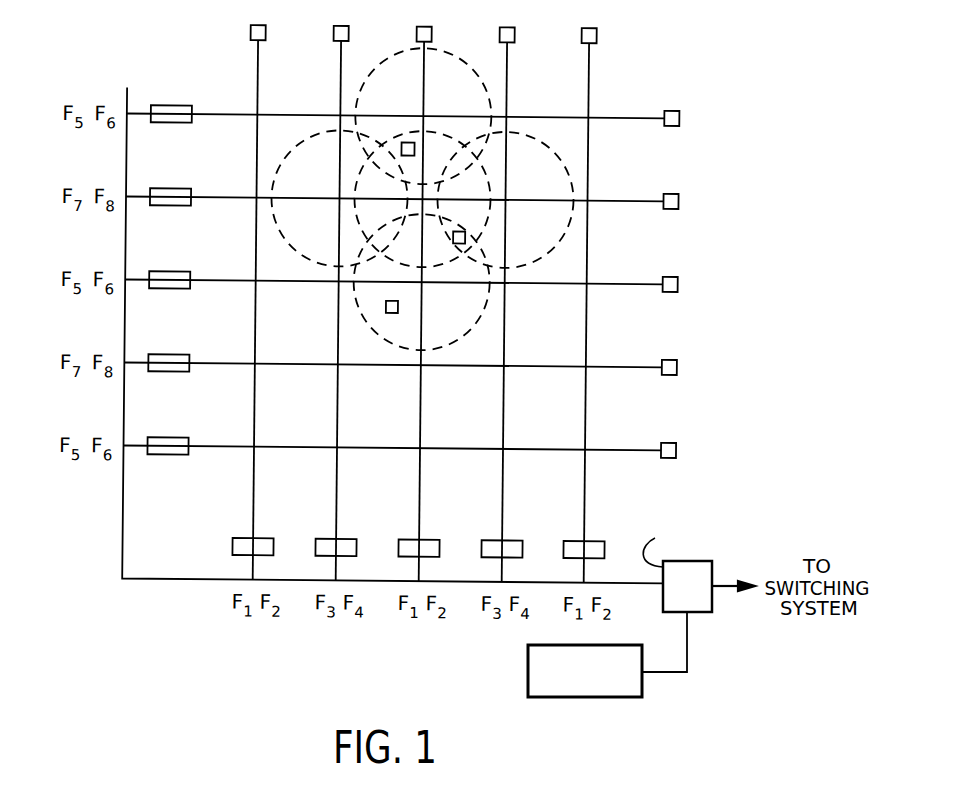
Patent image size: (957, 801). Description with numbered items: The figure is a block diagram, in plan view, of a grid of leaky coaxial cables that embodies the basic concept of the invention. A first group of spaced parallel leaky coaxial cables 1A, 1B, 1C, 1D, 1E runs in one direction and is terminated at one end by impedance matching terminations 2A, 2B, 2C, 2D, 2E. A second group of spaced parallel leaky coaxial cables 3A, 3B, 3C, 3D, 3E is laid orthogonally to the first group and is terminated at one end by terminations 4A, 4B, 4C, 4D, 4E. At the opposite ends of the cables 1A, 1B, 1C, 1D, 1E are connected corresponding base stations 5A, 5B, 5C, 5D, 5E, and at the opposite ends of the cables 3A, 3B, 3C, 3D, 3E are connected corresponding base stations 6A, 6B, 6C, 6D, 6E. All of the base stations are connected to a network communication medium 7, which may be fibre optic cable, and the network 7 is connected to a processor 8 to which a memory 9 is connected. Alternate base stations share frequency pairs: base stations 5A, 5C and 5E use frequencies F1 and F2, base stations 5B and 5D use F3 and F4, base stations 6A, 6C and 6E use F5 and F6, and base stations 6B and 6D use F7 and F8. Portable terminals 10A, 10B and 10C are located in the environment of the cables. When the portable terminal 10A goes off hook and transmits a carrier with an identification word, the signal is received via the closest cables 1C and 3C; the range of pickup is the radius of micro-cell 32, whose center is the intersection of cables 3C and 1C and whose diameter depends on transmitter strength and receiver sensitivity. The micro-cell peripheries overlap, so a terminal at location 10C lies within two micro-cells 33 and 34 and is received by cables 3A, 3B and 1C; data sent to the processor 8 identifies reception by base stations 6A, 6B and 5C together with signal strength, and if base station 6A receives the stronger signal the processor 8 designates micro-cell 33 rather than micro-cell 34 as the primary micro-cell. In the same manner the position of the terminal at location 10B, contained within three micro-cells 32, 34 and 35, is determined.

The leaky coaxial cable 1A is at (255, 60).
The leaky coaxial cable 1B is at (338, 89).
The leaky coaxial cable 1C is at (421, 89).
The leaky coaxial cable 1D is at (504, 63).
The leaky coaxial cable 1E is at (586, 64).
The impedance matching termination 2A is at (255, 27).
The impedance matching termination 2B is at (338, 27).
The impedance matching termination 2C is at (421, 27).
The impedance matching termination 2D is at (504, 27).
The impedance matching termination 2E is at (586, 27).
The leaky coaxial cable 3A is at (603, 116).
The leaky coaxial cable 3B is at (603, 199).
The leaky coaxial cable 3C is at (603, 282).
The leaky coaxial cable 3D is at (603, 365).
The leaky coaxial cable 3E is at (603, 448).
The termination 4A is at (670, 108).
The termination 4B is at (670, 191).
The termination 4C is at (670, 274).
The termination 4D is at (670, 357).
The termination 4E is at (670, 440).
The base station 5A is at (264, 540).
The base station 5B is at (347, 540).
The base station 5C is at (430, 540).
The base station 5D is at (513, 540).
The base station 5E is at (595, 540).
The base station 6A is at (169, 107).
The base station 6B is at (169, 190).
The base station 6C is at (169, 273).
The base station 6D is at (169, 356).
The base station 6E is at (169, 439).
The network communication medium 7 is at (126, 521).
The processor 8 is at (705, 613).
The memory 9 is at (528, 674).
The portable terminal 10A is at (398, 307).
The portable terminal 10B is at (464, 237).
The portable terminal 10C is at (413, 148).
The micro-cell 32 is at (473, 324).
The micro-cell 33 is at (360, 88).
The micro-cell 34 is at (399, 146).
The micro-cell 35 is at (561, 241).